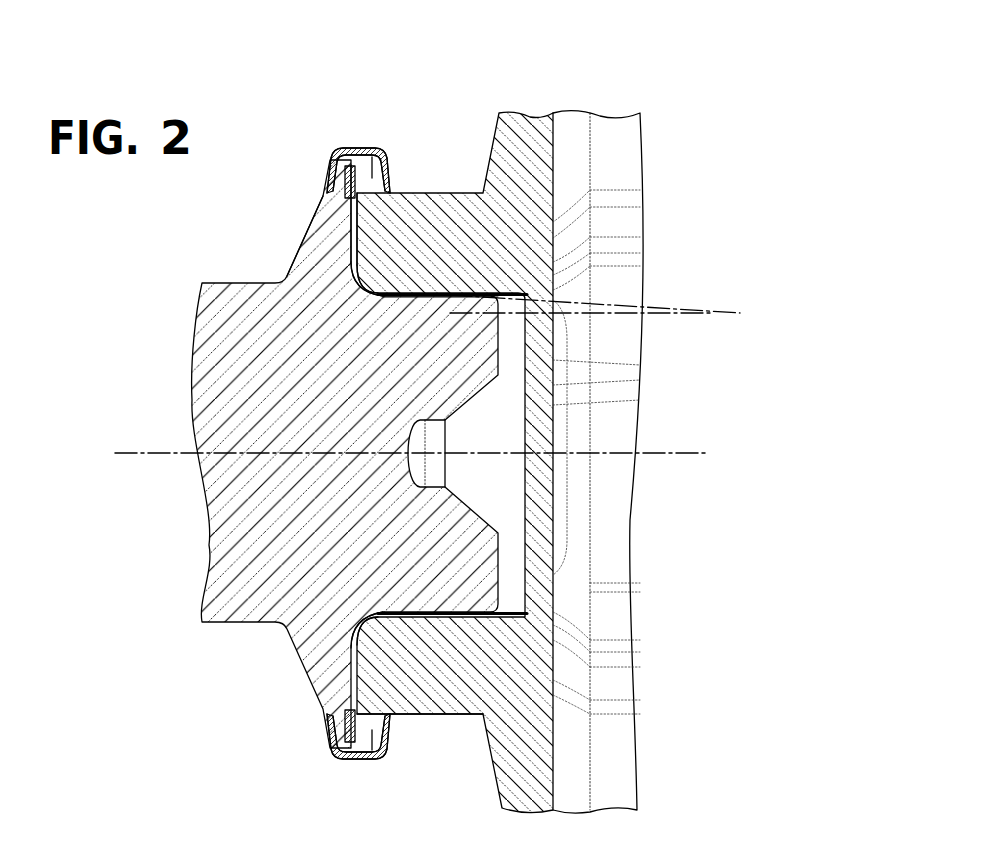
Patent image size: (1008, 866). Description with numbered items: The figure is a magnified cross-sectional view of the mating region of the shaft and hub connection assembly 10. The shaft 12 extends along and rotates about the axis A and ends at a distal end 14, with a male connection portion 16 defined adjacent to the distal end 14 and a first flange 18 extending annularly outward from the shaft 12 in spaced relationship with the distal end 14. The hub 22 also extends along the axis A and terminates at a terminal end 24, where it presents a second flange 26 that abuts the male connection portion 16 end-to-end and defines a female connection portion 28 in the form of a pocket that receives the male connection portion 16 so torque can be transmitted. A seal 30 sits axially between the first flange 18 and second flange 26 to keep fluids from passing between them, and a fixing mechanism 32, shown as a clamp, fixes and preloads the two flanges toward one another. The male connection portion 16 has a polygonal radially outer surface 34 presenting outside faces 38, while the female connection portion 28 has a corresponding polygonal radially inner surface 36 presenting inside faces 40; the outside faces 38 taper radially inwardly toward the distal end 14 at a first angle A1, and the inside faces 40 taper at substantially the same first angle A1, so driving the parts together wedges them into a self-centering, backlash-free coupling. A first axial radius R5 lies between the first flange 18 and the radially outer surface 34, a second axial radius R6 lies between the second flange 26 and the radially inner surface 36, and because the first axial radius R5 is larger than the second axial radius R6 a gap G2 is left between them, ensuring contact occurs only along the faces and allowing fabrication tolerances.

The shaft and hub connection assembly 10 is at (608, 70).
The shaft 12 is at (235, 632).
The distal end 14 is at (518, 608).
The male connection portion 16 is at (440, 285).
The first flange 18 is at (332, 217).
The hub 22 is at (447, 724).
The terminal end 24 is at (353, 252).
The second flange 26 is at (378, 150).
The female connection portion 28 is at (420, 307).
The seal 30 is at (353, 164).
The fixing mechanism 32 is at (337, 148).
The radially outer surface 34 is at (433, 617).
The radially inner surface 36 is at (378, 605).
The outside faces 38 is at (474, 295).
The inside faces 40 is at (367, 630).
The axis A is at (655, 457).
The first angle A1 is at (668, 348).
The gap G2 is at (354, 280).
The first axial radius R5 is at (373, 297).
The second axial radius R6 is at (373, 284).